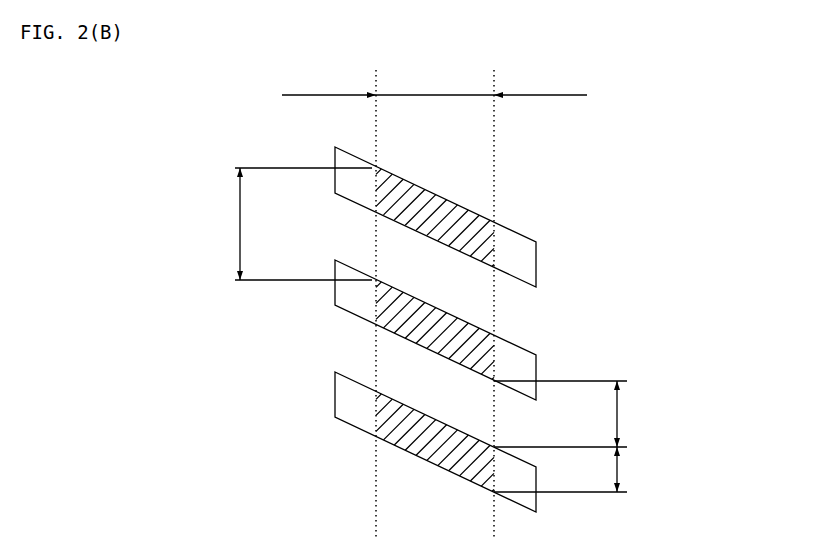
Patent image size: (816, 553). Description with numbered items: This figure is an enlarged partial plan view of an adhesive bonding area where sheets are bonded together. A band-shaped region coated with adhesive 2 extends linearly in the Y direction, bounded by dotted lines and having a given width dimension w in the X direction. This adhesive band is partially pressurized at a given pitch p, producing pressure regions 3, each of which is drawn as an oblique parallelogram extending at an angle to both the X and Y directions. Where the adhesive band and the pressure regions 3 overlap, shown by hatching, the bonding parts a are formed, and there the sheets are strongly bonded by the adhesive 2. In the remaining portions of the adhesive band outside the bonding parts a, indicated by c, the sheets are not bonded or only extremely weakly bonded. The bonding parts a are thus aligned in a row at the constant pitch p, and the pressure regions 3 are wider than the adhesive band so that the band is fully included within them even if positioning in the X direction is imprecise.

The adhesive 2 is at (438, 302).
The pressure regions 3 is at (537, 262).
The bonding parts a is at (478, 208).
The non-bonded regions of adhesive band c is at (494, 300).
The width dimension w is at (437, 75).
The pitch p is at (291, 224).